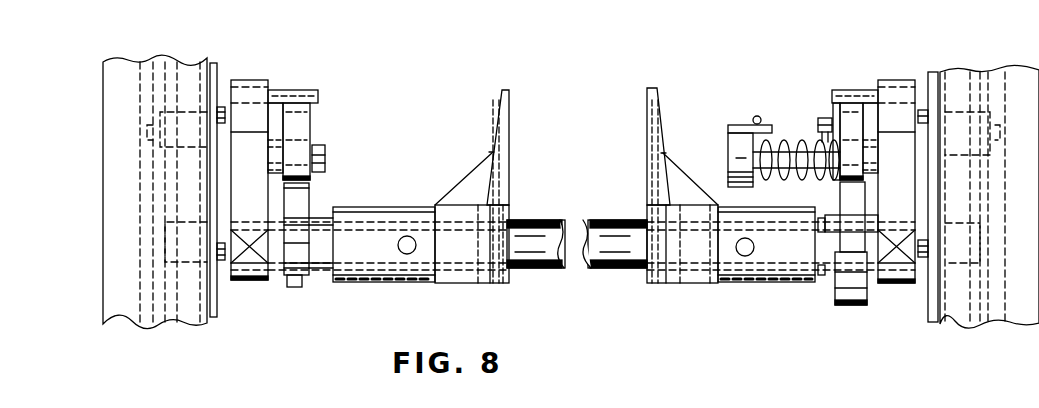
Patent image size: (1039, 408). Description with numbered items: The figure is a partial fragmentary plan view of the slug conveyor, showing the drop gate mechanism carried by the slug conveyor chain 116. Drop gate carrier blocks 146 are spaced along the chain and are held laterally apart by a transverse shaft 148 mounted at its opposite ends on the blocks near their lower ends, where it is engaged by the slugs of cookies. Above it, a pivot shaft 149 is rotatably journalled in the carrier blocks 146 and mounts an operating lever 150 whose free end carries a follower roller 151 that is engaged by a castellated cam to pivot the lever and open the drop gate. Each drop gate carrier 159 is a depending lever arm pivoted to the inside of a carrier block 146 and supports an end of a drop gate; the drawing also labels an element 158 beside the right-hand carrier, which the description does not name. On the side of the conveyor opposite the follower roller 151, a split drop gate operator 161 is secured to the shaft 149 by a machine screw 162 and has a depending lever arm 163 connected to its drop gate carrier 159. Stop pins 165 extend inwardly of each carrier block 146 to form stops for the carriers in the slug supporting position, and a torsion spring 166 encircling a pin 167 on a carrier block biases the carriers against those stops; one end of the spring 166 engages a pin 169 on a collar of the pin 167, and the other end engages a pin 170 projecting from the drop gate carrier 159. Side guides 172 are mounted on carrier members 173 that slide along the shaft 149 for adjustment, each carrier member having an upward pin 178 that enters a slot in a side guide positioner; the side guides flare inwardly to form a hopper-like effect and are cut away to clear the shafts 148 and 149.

The slug conveyor chain 116 is at (213, 298).
The drop gate carrier block 146 is at (255, 278).
The transverse shaft 148 is at (530, 223).
The pivot shaft 149 is at (520, 270).
The operating lever 150 is at (827, 287).
The follower roller 151 is at (846, 306).
The right disc 158 is at (855, 123).
The drop gate carrier 159 is at (307, 128).
The drop gate operator 161 is at (312, 253).
The machine screw 162 is at (300, 288).
The lever arm 163 is at (312, 195).
The stop pin 165 is at (298, 90).
The torsion spring 166 is at (780, 140).
The pin 167 is at (728, 158).
The pin 169 is at (737, 125).
The pin 170 is at (822, 118).
The side guide 172 is at (508, 128).
The carrier member 173 is at (395, 206).
The pin 178 is at (410, 248).